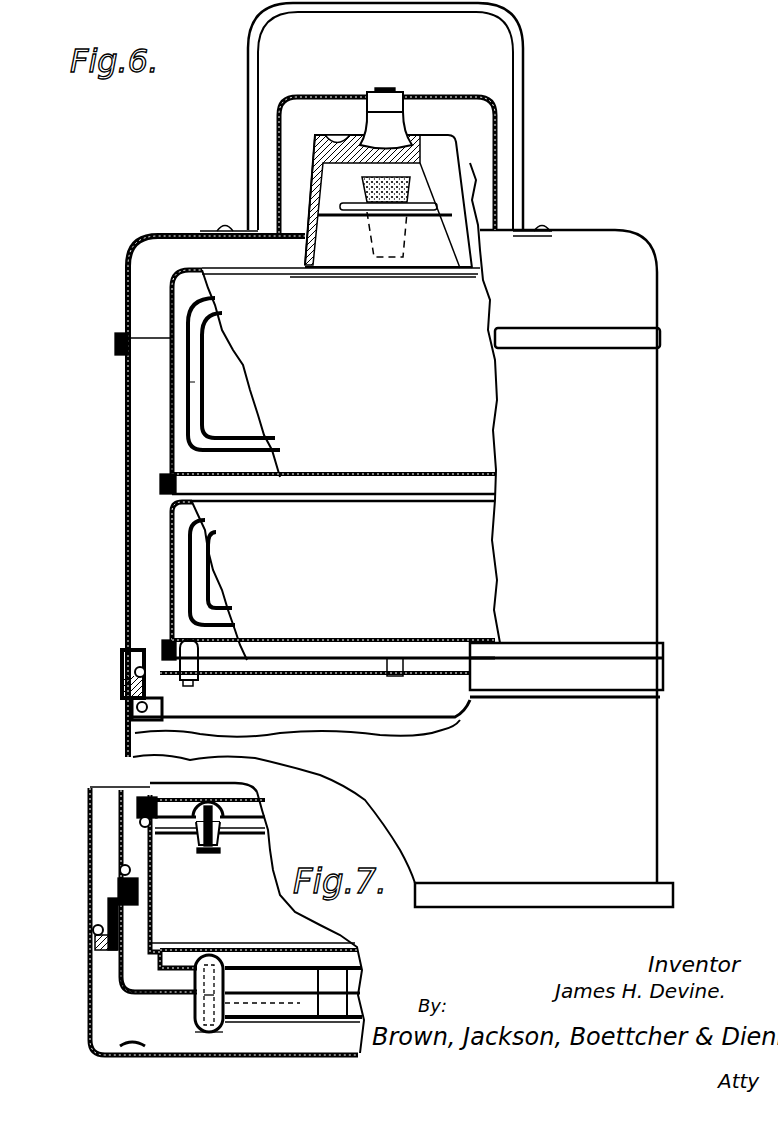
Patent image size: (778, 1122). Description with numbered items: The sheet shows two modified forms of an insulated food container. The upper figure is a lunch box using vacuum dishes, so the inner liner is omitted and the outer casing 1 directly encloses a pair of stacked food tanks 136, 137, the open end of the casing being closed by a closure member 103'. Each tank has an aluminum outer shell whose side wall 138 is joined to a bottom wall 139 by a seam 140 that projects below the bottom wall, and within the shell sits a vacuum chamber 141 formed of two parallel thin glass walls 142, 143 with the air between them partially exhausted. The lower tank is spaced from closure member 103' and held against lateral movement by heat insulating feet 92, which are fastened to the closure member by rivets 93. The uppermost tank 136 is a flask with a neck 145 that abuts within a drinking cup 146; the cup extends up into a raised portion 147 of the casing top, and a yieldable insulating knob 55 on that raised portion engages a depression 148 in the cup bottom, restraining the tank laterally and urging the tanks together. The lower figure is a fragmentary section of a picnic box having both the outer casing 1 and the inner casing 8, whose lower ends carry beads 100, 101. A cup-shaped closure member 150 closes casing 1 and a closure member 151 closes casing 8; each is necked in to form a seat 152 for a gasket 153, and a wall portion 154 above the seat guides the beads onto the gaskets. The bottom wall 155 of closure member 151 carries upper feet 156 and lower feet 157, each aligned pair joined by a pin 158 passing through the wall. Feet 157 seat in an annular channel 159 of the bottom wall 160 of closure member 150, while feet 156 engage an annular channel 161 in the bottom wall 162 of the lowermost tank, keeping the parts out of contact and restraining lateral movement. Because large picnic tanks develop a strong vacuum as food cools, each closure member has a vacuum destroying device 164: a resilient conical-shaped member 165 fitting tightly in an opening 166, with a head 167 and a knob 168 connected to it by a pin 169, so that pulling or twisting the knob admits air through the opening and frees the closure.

In FIG. 6, the outer casing 1 is at (127, 456).
In FIG. 7, the outer casing 1 is at (90, 808).
In FIG. 7, the inner casing 8 is at (120, 831).
In FIG. 6, the yieldable insulating knob 55 is at (356, 120).
In FIG. 6, the heat insulating feet 92 is at (192, 662).
In FIG. 6, the rivets 93 is at (187, 686).
In FIG. 7, the bead 100 is at (93, 930).
In FIG. 7, the bead 101 is at (120, 870).
In FIG. 6, the closure member 103' is at (300, 734).
In FIG. 6, the food tank 136 is at (288, 373).
In FIG. 6, the food tank 137 is at (333, 580).
In FIG. 6, the side wall 138 is at (170, 385).
In FIG. 6, the bottom wall 139 is at (236, 640).
In FIG. 6, the seam 140 is at (160, 483).
In FIG. 6, the vacuum chamber 141 is at (195, 332).
In FIG. 6, the glass wall 142 is at (190, 384).
In FIG. 6, the glass wall 143 is at (203, 412).
In FIG. 6, the neck 145 is at (327, 213).
In FIG. 6, the drinking cup 146 is at (315, 172).
In FIG. 6, the raised portion 147 is at (428, 96).
In FIG. 6, the depression 148 is at (412, 136).
In FIG. 7, the closure member 150 is at (90, 1022).
In FIG. 7, the closure member 151 is at (117, 980).
In FIG. 7, the seat 152 is at (135, 905).
In FIG. 7, the gasket 153 is at (135, 887).
In FIG. 7, the wall portion 154 is at (150, 852).
In FIG. 7, the bottom wall 155 is at (292, 992).
In FIG. 7, the feet 156 is at (196, 983).
In FIG. 7, the feet 157 is at (198, 1005).
In FIG. 7, the pin 158 is at (226, 1004).
In FIG. 7, the annular channel 159 is at (212, 1035).
In FIG. 7, the bottom wall 160 is at (284, 1023).
In FIG. 7, the annular channel 161 is at (206, 958).
In FIG. 7, the bottom wall 162 is at (276, 967).
In FIG. 7, the vacuum destroying device 164 is at (242, 827).
In FIG. 7, the conical-shaped member 165 is at (218, 838).
In FIG. 7, the opening 166 is at (200, 838).
In FIG. 7, the head 167 is at (209, 854).
In FIG. 7, the knob 168 is at (207, 803).
In FIG. 7, the pin 169 is at (226, 812).